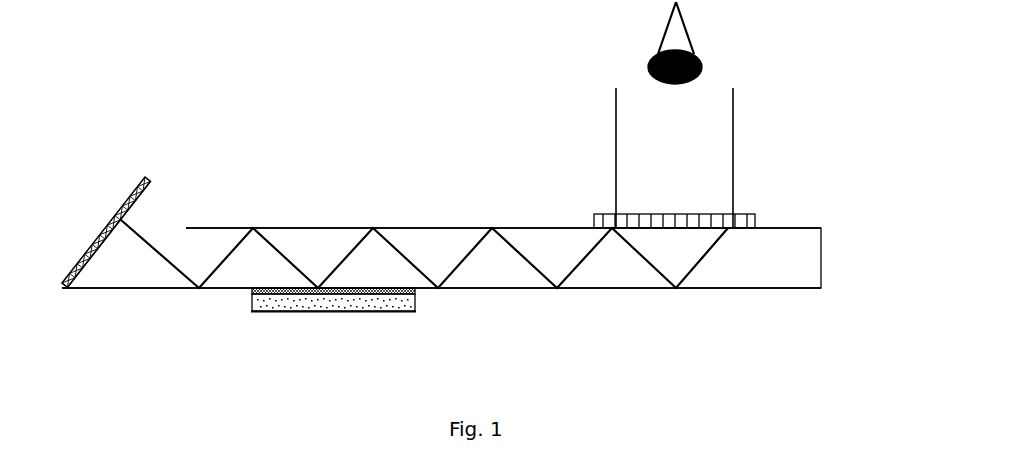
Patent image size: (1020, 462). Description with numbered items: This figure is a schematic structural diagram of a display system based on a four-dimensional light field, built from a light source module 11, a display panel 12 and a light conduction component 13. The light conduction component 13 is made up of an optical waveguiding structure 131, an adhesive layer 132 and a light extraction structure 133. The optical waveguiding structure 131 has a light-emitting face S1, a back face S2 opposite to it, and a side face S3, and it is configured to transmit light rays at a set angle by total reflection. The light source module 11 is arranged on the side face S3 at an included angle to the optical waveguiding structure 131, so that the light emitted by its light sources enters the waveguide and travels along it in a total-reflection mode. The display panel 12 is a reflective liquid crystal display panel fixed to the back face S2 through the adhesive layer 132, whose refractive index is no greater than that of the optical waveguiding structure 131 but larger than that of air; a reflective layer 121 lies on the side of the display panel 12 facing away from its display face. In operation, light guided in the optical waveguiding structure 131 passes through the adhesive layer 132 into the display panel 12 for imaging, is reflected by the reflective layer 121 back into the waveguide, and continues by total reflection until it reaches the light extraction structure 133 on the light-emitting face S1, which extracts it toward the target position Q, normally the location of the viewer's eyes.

The light source module 11 is at (108, 223).
The side face S3 is at (138, 203).
The display panel 12 is at (339, 328).
The reflective layer 121 is at (318, 311).
The adhesive layer 132 is at (412, 291).
The light conduction component 13 is at (493, 260).
The optical waveguiding structure 131 is at (808, 255).
The light extraction structure 133 is at (755, 221).
The light-emitting face S1 is at (548, 228).
The back face S2 is at (603, 290).
The target position Q is at (702, 67).